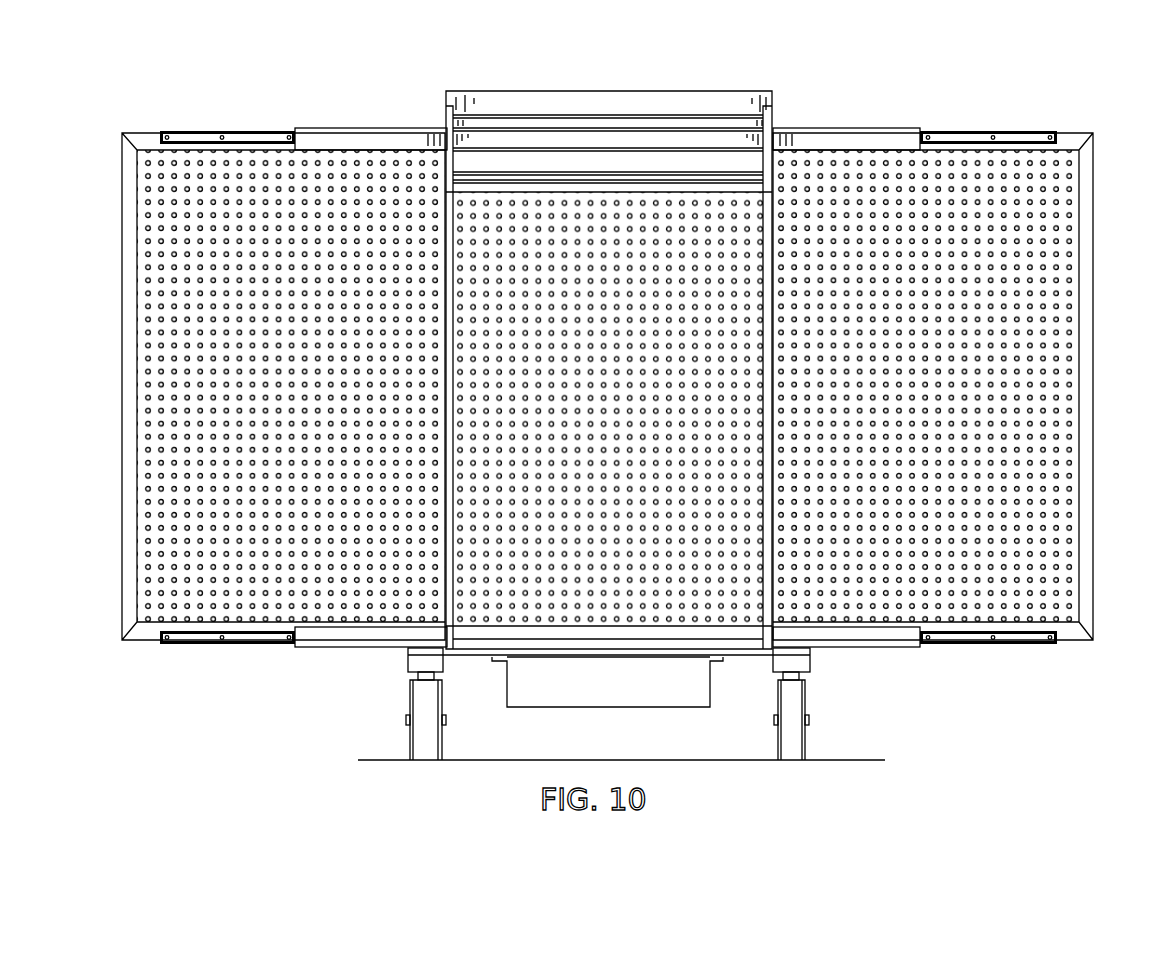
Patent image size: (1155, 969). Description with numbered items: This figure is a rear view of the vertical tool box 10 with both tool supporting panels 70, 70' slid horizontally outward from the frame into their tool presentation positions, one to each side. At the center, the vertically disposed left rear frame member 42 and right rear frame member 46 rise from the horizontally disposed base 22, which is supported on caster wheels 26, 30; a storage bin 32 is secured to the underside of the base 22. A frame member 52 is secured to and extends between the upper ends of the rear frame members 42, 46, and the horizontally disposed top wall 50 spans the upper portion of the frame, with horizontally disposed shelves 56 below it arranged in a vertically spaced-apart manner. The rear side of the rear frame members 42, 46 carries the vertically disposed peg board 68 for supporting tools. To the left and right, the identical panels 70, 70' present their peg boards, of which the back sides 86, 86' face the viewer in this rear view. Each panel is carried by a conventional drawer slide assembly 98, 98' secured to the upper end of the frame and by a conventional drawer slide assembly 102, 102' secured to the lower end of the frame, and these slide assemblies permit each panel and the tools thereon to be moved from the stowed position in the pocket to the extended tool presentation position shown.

The vertical tool box 10 is at (750, 75).
The base 22 is at (490, 643).
The caster wheel 26 is at (795, 715).
The caster wheel 30 is at (423, 713).
The storage bin 32 is at (578, 686).
The left rear frame member 42 is at (740, 200).
The right rear frame member 46 is at (440, 155).
The top wall 50 is at (607, 125).
The frame member 52 is at (682, 92).
The shelves 56 is at (528, 178).
The peg board 68 is at (775, 131).
The tool supporting panel 70 is at (962, 347).
The tool supporting panel 70' is at (253, 341).
The back side of peg board 86 is at (962, 386).
The back side of peg board 86' is at (253, 386).
The drawer slide assembly 98 is at (914, 100).
The drawer slide assembly 98' is at (305, 102).
The drawer slide assembly 102 is at (914, 668).
The drawer slide assembly 102' is at (305, 683).